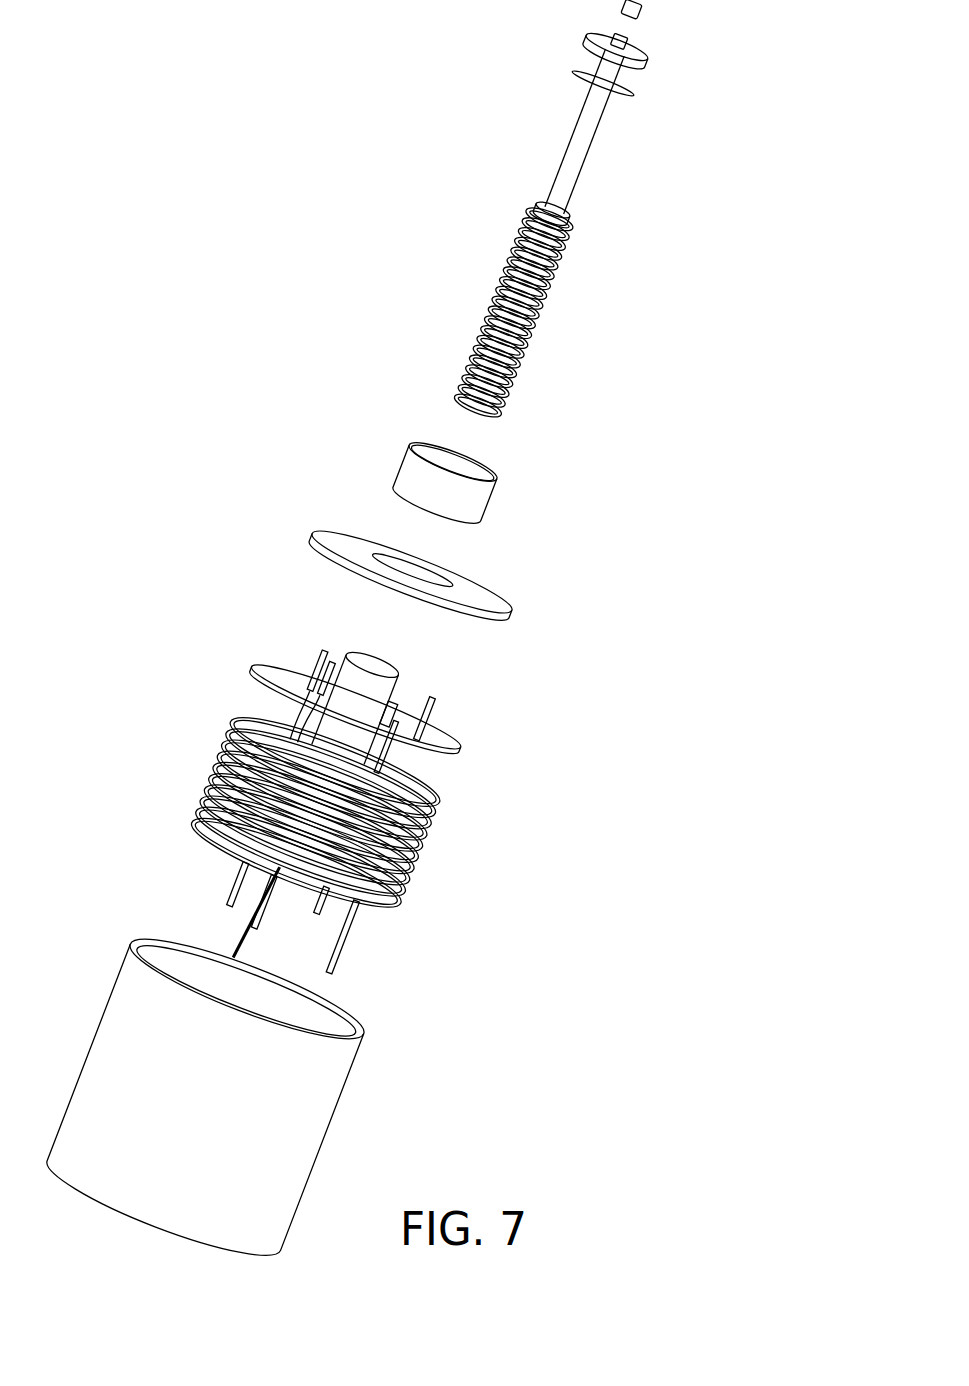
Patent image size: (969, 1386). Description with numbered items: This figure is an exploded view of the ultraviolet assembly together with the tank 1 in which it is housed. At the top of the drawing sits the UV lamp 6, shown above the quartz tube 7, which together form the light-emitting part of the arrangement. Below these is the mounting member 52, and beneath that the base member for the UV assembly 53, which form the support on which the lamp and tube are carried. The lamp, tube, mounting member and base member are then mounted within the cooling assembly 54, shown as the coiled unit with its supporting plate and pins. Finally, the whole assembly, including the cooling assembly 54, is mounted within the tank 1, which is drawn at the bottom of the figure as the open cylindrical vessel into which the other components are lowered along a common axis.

The tank 1 is at (113, 982).
The UV lamp 6 is at (568, 145).
The quartz tube 7 is at (502, 276).
The mounting member 52 is at (404, 461).
The base member for the UV assembly 53 is at (490, 601).
The cooling assembly 54 is at (487, 747).